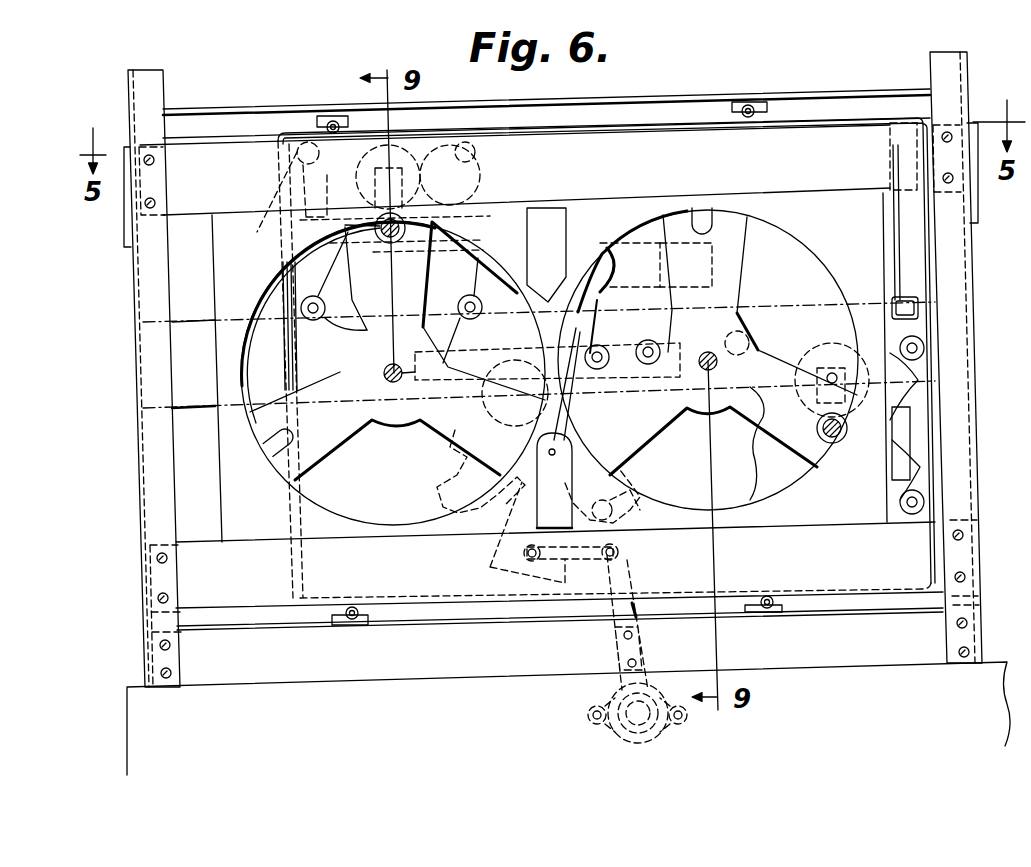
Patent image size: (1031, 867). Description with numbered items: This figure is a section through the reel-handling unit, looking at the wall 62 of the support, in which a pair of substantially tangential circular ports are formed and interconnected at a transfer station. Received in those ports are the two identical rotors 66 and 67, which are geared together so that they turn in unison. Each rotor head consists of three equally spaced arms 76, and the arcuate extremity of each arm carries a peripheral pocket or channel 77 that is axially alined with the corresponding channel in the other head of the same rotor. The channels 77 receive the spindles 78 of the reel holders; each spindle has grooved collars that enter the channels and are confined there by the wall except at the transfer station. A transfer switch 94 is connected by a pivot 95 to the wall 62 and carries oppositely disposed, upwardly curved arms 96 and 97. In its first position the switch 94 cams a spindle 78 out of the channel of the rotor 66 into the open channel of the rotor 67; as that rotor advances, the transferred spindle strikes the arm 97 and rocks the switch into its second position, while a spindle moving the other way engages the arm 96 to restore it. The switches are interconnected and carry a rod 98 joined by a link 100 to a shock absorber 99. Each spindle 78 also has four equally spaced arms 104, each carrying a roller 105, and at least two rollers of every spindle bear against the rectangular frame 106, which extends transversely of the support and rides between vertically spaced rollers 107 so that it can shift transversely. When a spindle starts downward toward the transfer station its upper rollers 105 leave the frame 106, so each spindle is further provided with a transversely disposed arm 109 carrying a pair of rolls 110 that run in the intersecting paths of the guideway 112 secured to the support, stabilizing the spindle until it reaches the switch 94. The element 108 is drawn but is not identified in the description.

The wall 62 is at (223, 420).
The rotor 66 is at (380, 423).
The rotor 67 is at (747, 328).
The arms 76 is at (783, 377).
The peripheral pocket or channel 77 is at (703, 215).
The spindle 78 is at (400, 222).
The transfer switch 94 is at (576, 305).
The pivot 95 is at (552, 458).
The arm 96 is at (437, 487).
The arm 97 is at (627, 515).
The rod 98 is at (596, 555).
The shock absorber 99 is at (618, 733).
The link 100 is at (628, 576).
The arms 104 is at (421, 137).
The roller 105 is at (303, 298).
The rectangular frame 106 is at (631, 124).
The rollers 107 is at (750, 108).
The side bracket 108 is at (897, 332).
The transversely disposed arm 109 is at (348, 277).
The rolls 110 is at (485, 198).
The guideway 112 is at (597, 247).